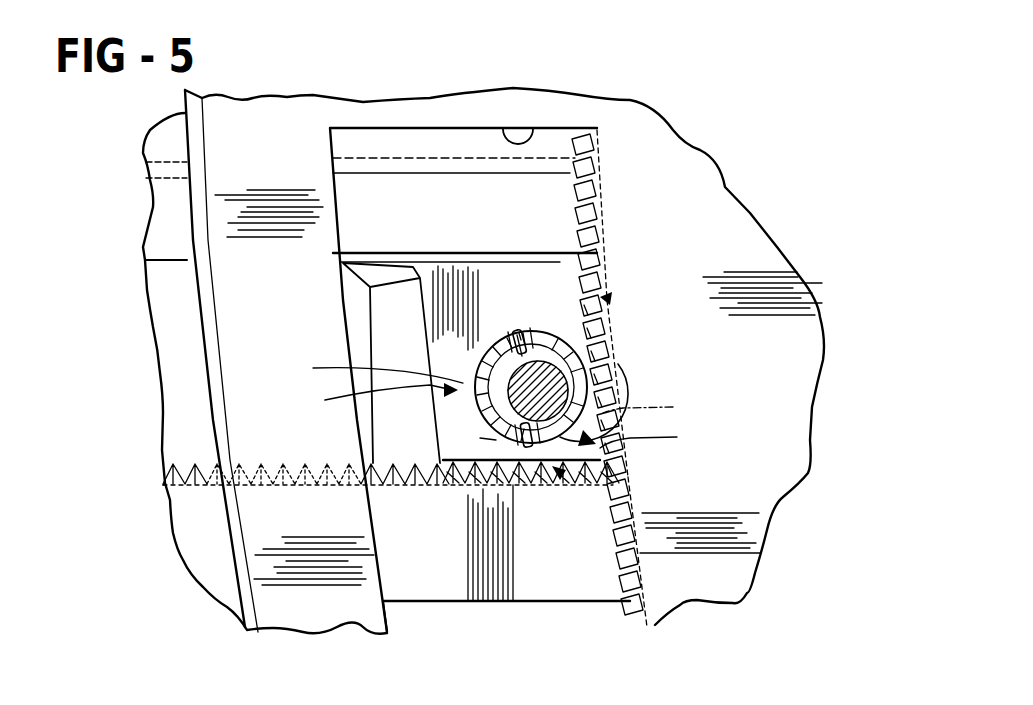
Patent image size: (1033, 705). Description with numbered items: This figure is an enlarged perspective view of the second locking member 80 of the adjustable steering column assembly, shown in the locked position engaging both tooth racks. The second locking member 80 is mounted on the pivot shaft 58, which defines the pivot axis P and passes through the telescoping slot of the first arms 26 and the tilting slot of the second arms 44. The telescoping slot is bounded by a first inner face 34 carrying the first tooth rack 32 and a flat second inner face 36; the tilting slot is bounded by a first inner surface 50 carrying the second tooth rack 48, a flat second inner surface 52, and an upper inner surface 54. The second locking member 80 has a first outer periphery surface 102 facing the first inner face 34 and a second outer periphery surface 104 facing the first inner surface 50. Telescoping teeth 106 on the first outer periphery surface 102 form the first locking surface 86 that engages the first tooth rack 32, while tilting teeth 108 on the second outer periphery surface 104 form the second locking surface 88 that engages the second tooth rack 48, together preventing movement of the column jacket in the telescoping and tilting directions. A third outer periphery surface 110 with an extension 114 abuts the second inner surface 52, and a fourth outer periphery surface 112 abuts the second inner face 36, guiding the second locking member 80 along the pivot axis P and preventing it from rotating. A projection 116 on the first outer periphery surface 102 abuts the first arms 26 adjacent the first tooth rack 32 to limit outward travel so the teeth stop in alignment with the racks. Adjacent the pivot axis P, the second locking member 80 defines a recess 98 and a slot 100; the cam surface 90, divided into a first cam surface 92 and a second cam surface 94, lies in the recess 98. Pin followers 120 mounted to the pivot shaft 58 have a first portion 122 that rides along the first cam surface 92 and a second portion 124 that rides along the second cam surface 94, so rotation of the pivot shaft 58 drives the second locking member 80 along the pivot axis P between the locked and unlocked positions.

The first arms 26 is at (535, 583).
The first tooth rack 32 is at (180, 460).
The first inner face 34 is at (193, 487).
The second inner face 36 is at (163, 263).
The second arms 44 is at (742, 515).
The second tooth rack 48 is at (602, 247).
The first inner surface 50 is at (643, 573).
The second inner surface 52 is at (390, 603).
The upper inner surface 54 is at (533, 130).
The pivot shaft 58 is at (513, 337).
The second locking member 80 is at (483, 260).
The first locking surface 86 is at (560, 473).
The second locking surface 88 is at (605, 299).
The cam surface 90 is at (375, 400).
The first cam surface 92 is at (592, 318).
The second cam surface 94 is at (487, 440).
The recess 98 is at (603, 402).
The slot 100 is at (492, 406).
The first outer periphery surface 102 is at (633, 502).
The second outer periphery surface 104 is at (602, 265).
The telescoping teeth 106 is at (512, 548).
The tilting teeth 108 is at (600, 328).
The third outer periphery surface 110 is at (343, 319).
The fourth outer periphery surface 112 is at (402, 262).
The extension 114 is at (412, 484).
The projection 116 is at (368, 455).
The pin followers 120 is at (527, 333).
The first portion 122 is at (517, 343).
The second portion 124 is at (528, 447).
The pivot axis P is at (647, 409).